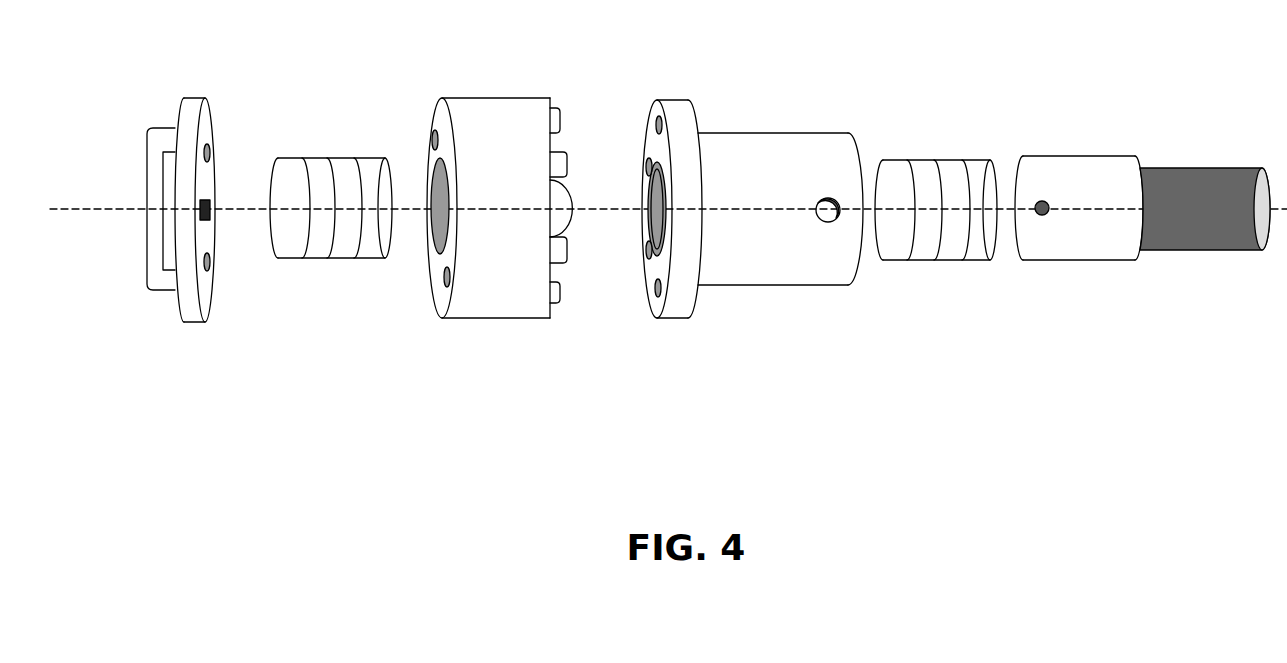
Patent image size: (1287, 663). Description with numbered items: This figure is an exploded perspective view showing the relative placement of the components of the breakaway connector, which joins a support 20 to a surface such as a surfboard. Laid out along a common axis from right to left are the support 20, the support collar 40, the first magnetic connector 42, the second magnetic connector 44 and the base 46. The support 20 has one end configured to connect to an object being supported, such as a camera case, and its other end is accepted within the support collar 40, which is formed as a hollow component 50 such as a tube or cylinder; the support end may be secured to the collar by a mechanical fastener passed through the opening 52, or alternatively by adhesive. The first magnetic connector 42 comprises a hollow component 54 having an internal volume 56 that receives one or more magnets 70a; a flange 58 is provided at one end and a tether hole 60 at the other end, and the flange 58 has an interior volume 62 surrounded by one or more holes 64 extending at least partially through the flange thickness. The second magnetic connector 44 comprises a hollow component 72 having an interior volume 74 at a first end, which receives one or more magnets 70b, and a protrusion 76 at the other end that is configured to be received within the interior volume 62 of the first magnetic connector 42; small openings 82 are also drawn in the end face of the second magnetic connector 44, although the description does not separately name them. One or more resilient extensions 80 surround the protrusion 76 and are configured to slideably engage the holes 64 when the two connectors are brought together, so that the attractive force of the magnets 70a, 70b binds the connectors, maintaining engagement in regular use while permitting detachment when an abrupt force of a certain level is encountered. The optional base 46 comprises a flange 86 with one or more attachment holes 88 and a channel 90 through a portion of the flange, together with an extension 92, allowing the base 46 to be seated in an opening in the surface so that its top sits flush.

The support 20 is at (1198, 165).
The support collar 40 is at (1079, 214).
The first magnetic connector 42 is at (740, 207).
The second magnetic connector 44 is at (483, 211).
The base 46 is at (211, 197).
The hollow component 50 is at (1110, 243).
The opening 52 is at (1043, 217).
The hollow component 54 is at (797, 216).
The internal volume 56 is at (859, 158).
The flange 58 is at (680, 120).
The tether hole 60 is at (830, 217).
The interior volume 62 is at (653, 217).
The holes 64 is at (660, 117).
The magnets 70a is at (973, 217).
The magnets 70b is at (323, 240).
The hollow component 72 is at (478, 122).
The interior volume 74 is at (442, 227).
The protrusion 76 is at (572, 210).
The resilient extensions 80 is at (555, 303).
The hub holes 82 is at (435, 133).
The flange 86 is at (185, 120).
The attachment holes 88 is at (212, 275).
The channel 90 is at (209, 217).
The extension 92 is at (160, 285).